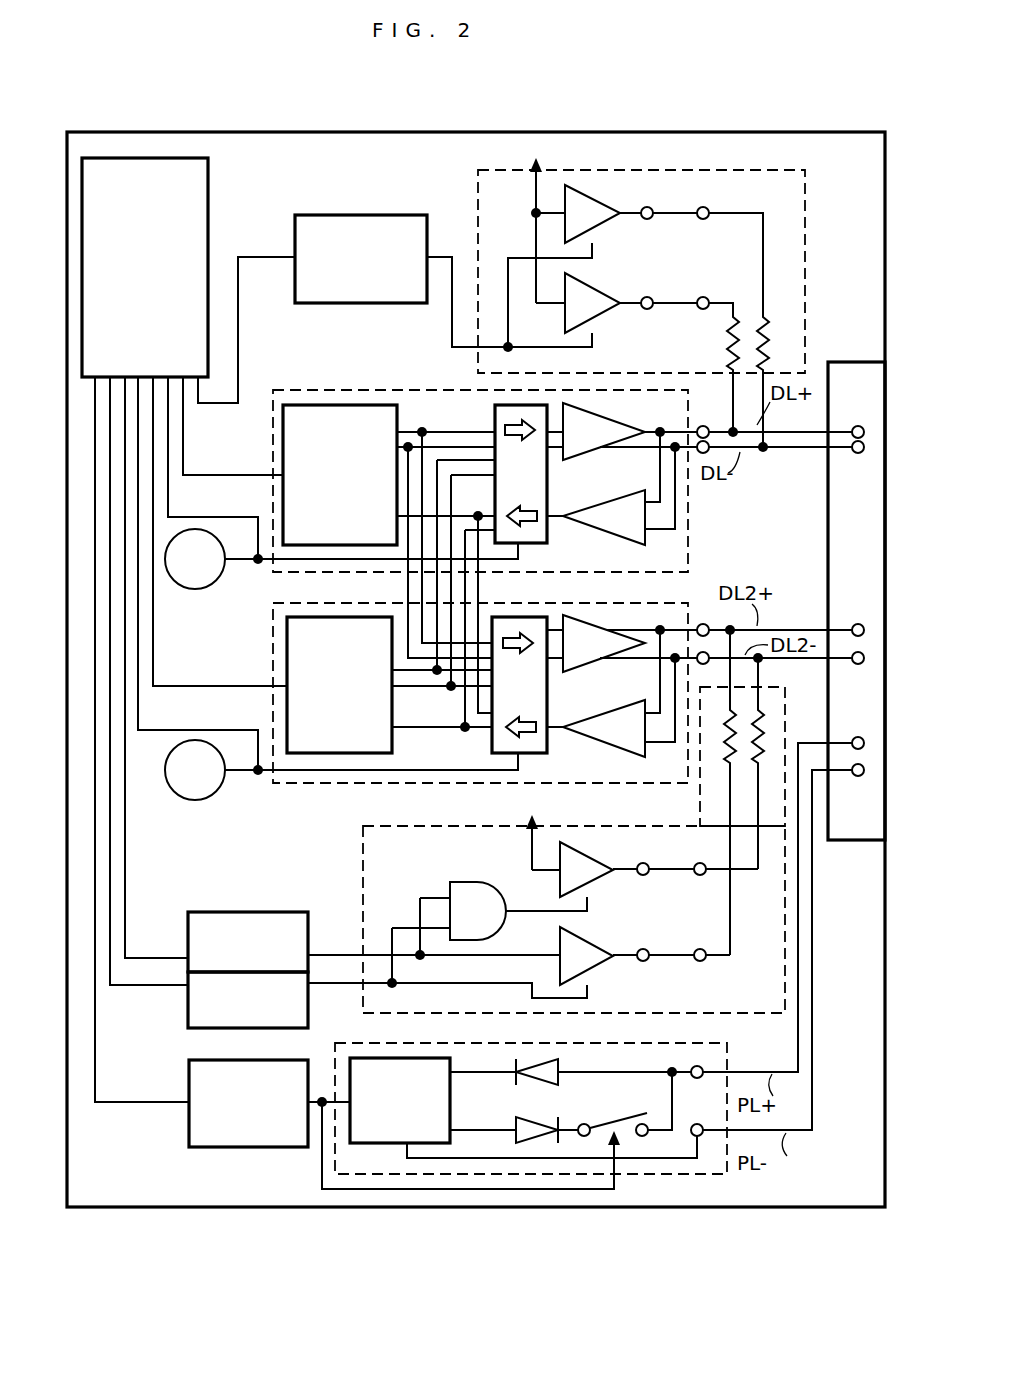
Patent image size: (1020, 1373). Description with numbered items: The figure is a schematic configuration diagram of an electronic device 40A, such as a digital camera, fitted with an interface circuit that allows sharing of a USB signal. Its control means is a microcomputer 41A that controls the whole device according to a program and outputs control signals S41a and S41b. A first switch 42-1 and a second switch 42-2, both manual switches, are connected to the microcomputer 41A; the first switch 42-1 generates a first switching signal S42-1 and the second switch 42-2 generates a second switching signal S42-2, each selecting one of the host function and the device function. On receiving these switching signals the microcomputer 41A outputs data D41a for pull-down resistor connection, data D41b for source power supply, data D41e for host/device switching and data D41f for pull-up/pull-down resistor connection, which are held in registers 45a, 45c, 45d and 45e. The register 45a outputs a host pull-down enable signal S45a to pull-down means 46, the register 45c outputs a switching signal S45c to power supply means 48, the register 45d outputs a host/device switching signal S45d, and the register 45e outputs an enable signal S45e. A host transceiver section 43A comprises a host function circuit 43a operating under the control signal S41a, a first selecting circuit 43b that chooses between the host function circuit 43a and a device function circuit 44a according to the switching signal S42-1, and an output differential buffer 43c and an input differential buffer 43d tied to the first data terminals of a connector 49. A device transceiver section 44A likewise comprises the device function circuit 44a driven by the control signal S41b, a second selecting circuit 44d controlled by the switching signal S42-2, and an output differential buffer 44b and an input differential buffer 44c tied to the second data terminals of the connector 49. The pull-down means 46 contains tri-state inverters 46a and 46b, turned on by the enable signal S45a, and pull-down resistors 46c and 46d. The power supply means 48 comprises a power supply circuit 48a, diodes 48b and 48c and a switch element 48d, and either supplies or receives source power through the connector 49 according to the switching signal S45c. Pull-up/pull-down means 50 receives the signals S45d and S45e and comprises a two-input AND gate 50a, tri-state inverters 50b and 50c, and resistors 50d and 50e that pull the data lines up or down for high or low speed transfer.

The electronic device 40A is at (152, 131).
The control means (MC) 41A is at (208, 200).
The first switch 42-1 is at (195, 590).
The second switch 42-2 is at (195, 800).
The host transceiver section 43A is at (453, 481).
The host function circuit 43a is at (283, 497).
The first selecting means 43b is at (495, 418).
The output differential buffer 43c is at (603, 445).
The input differential buffer 43d is at (592, 528).
The device transceiver section 44A is at (449, 680).
The device function circuit 44a is at (287, 712).
The output differential buffer 44b is at (603, 660).
The input differential buffer 44c is at (600, 740).
The second selecting means 44d is at (533, 617).
The register 45a is at (345, 215).
The register 45c is at (215, 1148).
The register 45d is at (245, 912).
The register 45e is at (180, 1012).
The pull-down means 46 is at (664, 291).
The tri-state inverter 46a is at (612, 292).
The tri-state inverter 46b is at (618, 222).
The pull-down resistor 46c is at (727, 328).
The pull-down resistor 46d is at (770, 318).
The power supply means 48 is at (552, 1096).
The power supply circuit 48a is at (455, 1124).
The diode 48b is at (538, 1120).
The diode 48c is at (565, 1070).
The switch element 48d is at (620, 1118).
The connector 49 is at (840, 362).
The pull-up/pull-down means 50 is at (574, 903).
The two-input AND gate 50a is at (475, 882).
The tri-state inverter 50b is at (607, 945).
The tri-state inverter 50c is at (607, 880).
The resistor 50d is at (735, 770).
The resistor 50e is at (760, 778).
The control signal S41a is at (205, 474).
The control signal S41b is at (168, 686).
The first switching signal S42-1 is at (245, 563).
The second switching signal S42-2 is at (262, 775).
The host pull-down enable signal S45a is at (452, 235).
The switching signal S45c is at (322, 1186).
The host/device switching signal S45d is at (330, 955).
The enable signal S45e is at (350, 985).
The data for pull-down resistor connection D41a is at (238, 360).
The data for source power supply D41b is at (178, 1106).
The data for host/device switching D41e is at (158, 958).
The data for pull-up/pull-down resistor connection D41f is at (158, 985).